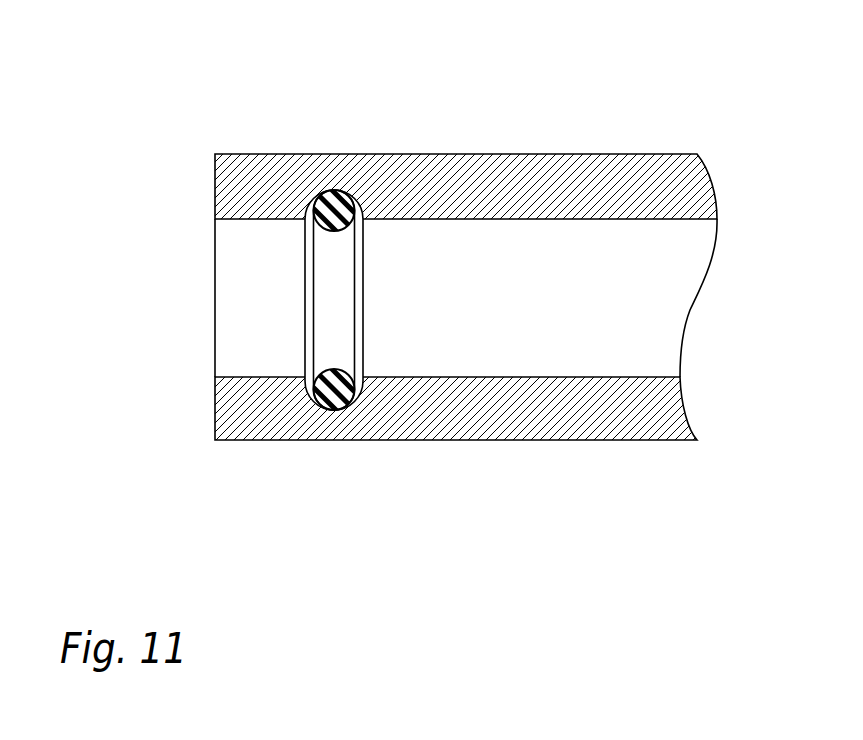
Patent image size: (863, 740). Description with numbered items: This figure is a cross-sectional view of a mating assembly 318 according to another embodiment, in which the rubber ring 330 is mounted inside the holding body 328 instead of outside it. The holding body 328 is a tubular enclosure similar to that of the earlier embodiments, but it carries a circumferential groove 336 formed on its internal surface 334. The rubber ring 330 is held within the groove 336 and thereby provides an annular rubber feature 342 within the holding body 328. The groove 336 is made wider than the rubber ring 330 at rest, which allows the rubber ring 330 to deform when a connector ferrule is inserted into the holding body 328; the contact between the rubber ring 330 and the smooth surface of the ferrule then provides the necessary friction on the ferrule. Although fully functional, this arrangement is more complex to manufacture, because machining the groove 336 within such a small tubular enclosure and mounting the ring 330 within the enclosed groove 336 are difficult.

The mating assembly 318 is at (557, 153).
The holding body 328 is at (512, 441).
The internal surface 334 is at (673, 219).
The annular rubber feature 342 is at (340, 230).
The circumferential groove 336 is at (316, 226).
The rubber ring 330 is at (326, 365).